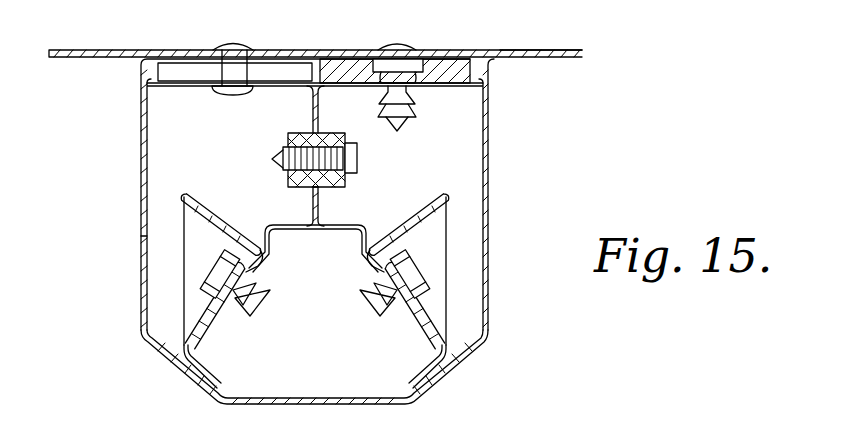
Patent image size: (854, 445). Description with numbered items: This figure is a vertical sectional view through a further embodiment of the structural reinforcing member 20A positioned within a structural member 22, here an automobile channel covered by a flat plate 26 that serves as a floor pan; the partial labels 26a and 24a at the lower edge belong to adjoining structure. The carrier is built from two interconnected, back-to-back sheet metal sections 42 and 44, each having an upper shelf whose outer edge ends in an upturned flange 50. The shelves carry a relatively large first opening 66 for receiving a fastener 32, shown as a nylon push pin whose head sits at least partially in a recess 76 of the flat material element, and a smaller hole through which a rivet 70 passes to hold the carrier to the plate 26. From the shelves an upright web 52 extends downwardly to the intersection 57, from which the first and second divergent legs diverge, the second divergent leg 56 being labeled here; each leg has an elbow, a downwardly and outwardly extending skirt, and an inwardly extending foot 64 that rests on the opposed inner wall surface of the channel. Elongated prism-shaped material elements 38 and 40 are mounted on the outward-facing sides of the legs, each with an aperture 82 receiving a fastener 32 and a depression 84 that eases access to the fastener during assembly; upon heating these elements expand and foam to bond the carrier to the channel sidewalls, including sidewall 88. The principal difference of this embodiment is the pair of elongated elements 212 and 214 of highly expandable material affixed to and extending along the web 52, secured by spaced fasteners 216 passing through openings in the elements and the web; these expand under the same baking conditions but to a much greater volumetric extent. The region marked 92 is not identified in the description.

The structural member 22 is at (124, 40).
The flat plate 26 is at (512, 51).
The rivet 70 is at (230, 47).
The sheet metal section 44 is at (330, 96).
The recess 76 is at (410, 60).
The first opening 66 is at (386, 90).
The upturned flange 50 is at (149, 79).
The reinforcing member 20A is at (183, 98).
The sheet metal section 42 is at (313, 101).
The elongated element 212 is at (348, 136).
The elongated element 214 is at (288, 152).
The fastener 216 is at (358, 162).
The cavity 92 is at (173, 158).
The sidewall 88 is at (146, 242).
The depression 84 is at (192, 262).
The material element 40 is at (218, 222).
The material element 38 is at (440, 214).
The aperture 82 is at (253, 248).
The upright web 52 is at (322, 210).
The intersection 57 is at (318, 229).
The second divergent leg 56 is at (266, 261).
The fastener 32 is at (268, 308).
The foot 64 is at (205, 385).
The panel 26a is at (485, 437).
The panel 24a is at (726, 434).